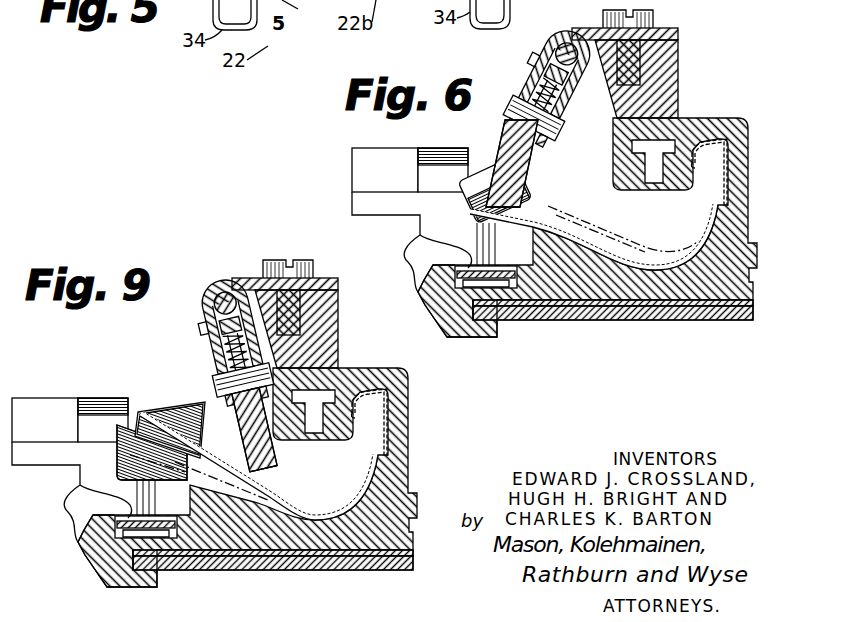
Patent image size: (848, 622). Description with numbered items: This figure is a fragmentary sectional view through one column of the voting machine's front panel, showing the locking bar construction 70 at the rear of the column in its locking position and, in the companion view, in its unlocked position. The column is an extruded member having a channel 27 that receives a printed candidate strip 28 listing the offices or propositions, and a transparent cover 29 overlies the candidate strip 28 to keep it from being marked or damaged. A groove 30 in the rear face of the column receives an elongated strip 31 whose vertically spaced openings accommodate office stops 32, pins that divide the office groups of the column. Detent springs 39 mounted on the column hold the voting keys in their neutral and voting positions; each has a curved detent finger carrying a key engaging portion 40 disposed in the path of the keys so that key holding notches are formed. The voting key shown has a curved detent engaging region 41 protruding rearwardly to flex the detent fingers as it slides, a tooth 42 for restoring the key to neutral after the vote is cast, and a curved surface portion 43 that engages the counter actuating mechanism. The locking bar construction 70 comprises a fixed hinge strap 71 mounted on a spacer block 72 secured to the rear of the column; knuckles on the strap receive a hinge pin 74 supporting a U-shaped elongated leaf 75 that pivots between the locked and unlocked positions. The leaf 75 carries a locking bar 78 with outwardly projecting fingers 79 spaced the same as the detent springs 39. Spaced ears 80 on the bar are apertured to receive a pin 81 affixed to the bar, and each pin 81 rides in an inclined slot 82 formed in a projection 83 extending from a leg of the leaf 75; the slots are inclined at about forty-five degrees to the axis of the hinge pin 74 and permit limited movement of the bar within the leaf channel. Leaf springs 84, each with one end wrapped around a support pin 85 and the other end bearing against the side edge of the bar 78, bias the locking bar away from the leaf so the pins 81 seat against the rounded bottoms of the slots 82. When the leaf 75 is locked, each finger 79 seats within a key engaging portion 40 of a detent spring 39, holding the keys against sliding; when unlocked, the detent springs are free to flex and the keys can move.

In FIG. 6, the channel 27 is at (505, 316).
In FIG. 9, the channel 27 is at (165, 576).
In FIG. 6, the candidate strip 28 is at (578, 307).
In FIG. 9, the candidate strip 28 is at (273, 574).
In FIG. 6, the transparent cover 29 is at (650, 314).
In FIG. 9, the transparent cover 29 is at (273, 577).
In FIG. 6, the groove 30 is at (421, 236).
In FIG. 9, the groove 30 is at (72, 492).
In FIG. 6, the elongated strip 31 is at (438, 310).
In FIG. 9, the elongated strip 31 is at (108, 551).
In FIG. 6, the office stops 32 is at (443, 288).
In FIG. 9, the office stops 32 is at (111, 538).
In FIG. 6, the detent springs 39 is at (596, 250).
In FIG. 9, the detent springs 39 is at (275, 505).
In FIG. 6, the key engaging portion 40 is at (548, 214).
In FIG. 9, the key engaging portion 40 is at (168, 400).
In FIG. 6, the curved detent engaging region 41 is at (477, 163).
In FIG. 9, the curved detent engaging region 41 is at (134, 412).
In FIG. 6, the tooth 42 is at (358, 164).
In FIG. 9, the tooth 42 is at (45, 407).
In FIG. 6, the curved surface portion 43 is at (446, 138).
In FIG. 9, the curved surface portion 43 is at (97, 409).
In FIG. 6, the locking bar construction 70 is at (522, 47).
In FIG. 9, the locking bar construction 70 is at (208, 272).
In FIG. 6, the hinge strap 71 is at (679, 31).
In FIG. 9, the hinge strap 71 is at (294, 270).
In FIG. 6, the spacer block 72 is at (679, 86).
In FIG. 9, the spacer block 72 is at (314, 329).
In FIG. 6, the hinge pin 74 is at (566, 36).
In FIG. 9, the hinge pin 74 is at (218, 282).
In FIG. 6, the U-shaped elongated leaf 75 is at (547, 52).
In FIG. 9, the U-shaped elongated leaf 75 is at (206, 293).
In FIG. 6, the locking bar 78 is at (530, 176).
In FIG. 9, the locking bar 78 is at (248, 422).
In FIG. 6, the fingers 79 is at (522, 204).
In FIG. 9, the fingers 79 is at (266, 462).
In FIG. 6, the ears 80 is at (566, 108).
In FIG. 9, the ears 80 is at (237, 351).
In FIG. 6, the pin 81 is at (562, 128).
In FIG. 9, the pin 81 is at (214, 380).
In FIG. 6, the inclined slots 82 is at (545, 104).
In FIG. 9, the inclined slots 82 is at (212, 346).
In FIG. 6, the projections 83 is at (540, 148).
In FIG. 9, the projections 83 is at (235, 405).
In FIG. 6, the leaf springs 84 is at (545, 82).
In FIG. 9, the leaf springs 84 is at (210, 318).
In FIG. 6, the support pin 85 is at (540, 67).
In FIG. 9, the support pin 85 is at (202, 326).